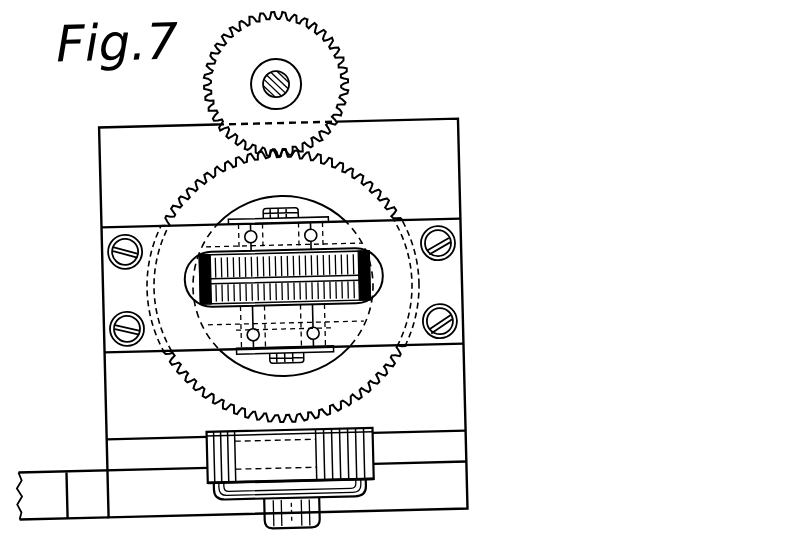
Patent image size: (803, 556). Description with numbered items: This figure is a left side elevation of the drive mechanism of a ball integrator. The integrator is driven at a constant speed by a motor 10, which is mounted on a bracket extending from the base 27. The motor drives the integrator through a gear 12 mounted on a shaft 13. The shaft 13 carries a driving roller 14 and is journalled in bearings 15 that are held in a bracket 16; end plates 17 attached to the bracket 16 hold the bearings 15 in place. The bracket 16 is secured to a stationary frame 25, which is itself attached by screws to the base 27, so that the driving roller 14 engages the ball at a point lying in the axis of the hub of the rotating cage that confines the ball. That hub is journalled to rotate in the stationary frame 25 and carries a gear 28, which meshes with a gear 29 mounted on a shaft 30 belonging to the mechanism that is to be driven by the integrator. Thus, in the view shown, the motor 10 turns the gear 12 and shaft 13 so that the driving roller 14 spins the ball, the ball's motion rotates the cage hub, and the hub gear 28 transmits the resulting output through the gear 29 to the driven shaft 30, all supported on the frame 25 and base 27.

The motor 10 is at (349, 431).
The gear 12 is at (369, 250).
The shaft 13 is at (291, 364).
The driving roller 14 is at (195, 295).
The bearings 15 is at (252, 344).
The bracket 16 is at (194, 338).
The end plates 17 is at (253, 221).
The stationary frame 25 is at (450, 387).
The base 27 is at (448, 496).
The gear 28 is at (197, 148).
The gear 29 is at (330, 62).
The shaft 30 is at (282, 72).